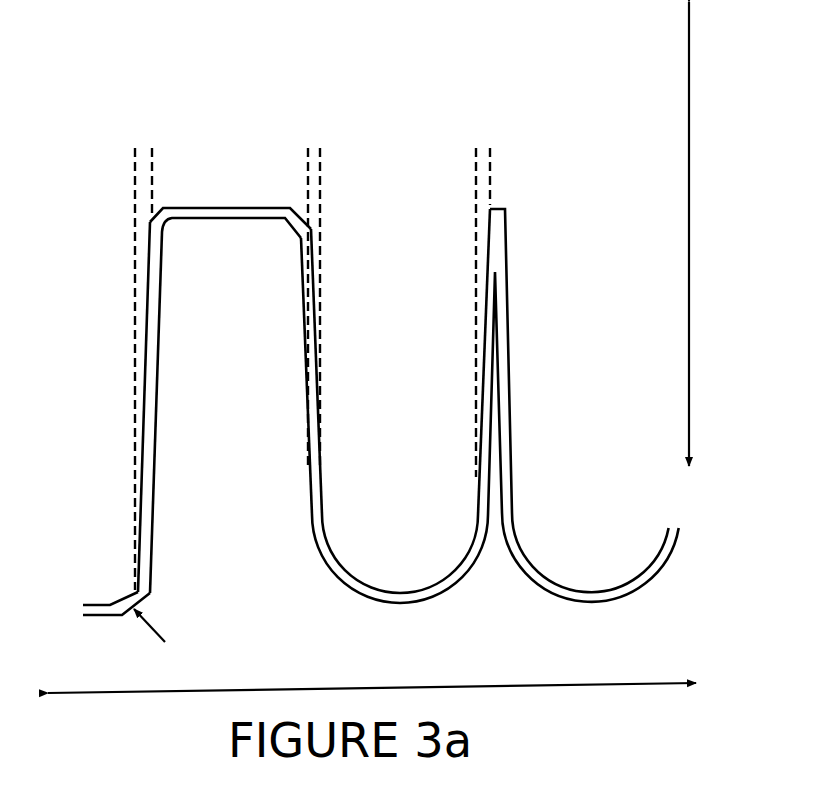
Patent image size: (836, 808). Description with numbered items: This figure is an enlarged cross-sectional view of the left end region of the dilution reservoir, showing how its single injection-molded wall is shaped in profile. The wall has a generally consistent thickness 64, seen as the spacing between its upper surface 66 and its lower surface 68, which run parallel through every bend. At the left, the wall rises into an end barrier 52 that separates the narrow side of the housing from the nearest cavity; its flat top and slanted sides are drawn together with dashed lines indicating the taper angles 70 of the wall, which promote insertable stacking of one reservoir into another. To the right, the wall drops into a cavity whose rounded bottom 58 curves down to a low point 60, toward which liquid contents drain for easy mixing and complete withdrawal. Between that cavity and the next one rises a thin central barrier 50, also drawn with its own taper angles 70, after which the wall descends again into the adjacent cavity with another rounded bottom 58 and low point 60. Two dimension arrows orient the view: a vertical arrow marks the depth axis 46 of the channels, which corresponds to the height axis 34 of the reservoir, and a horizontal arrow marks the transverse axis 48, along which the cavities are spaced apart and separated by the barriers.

The height axis 34 is at (0, 17).
The depth axis 46 is at (687, 230).
The transverse axis 48 is at (512, 685).
The central barrier 50 is at (500, 207).
The end barrier 52 is at (249, 206).
The bottom 58 is at (359, 583).
The low point 60 is at (573, 597).
The thickness 64 is at (121, 595).
The upper surface 66 is at (143, 418).
The lower surface 68 is at (153, 510).
The taper angles 70 is at (317, 148).